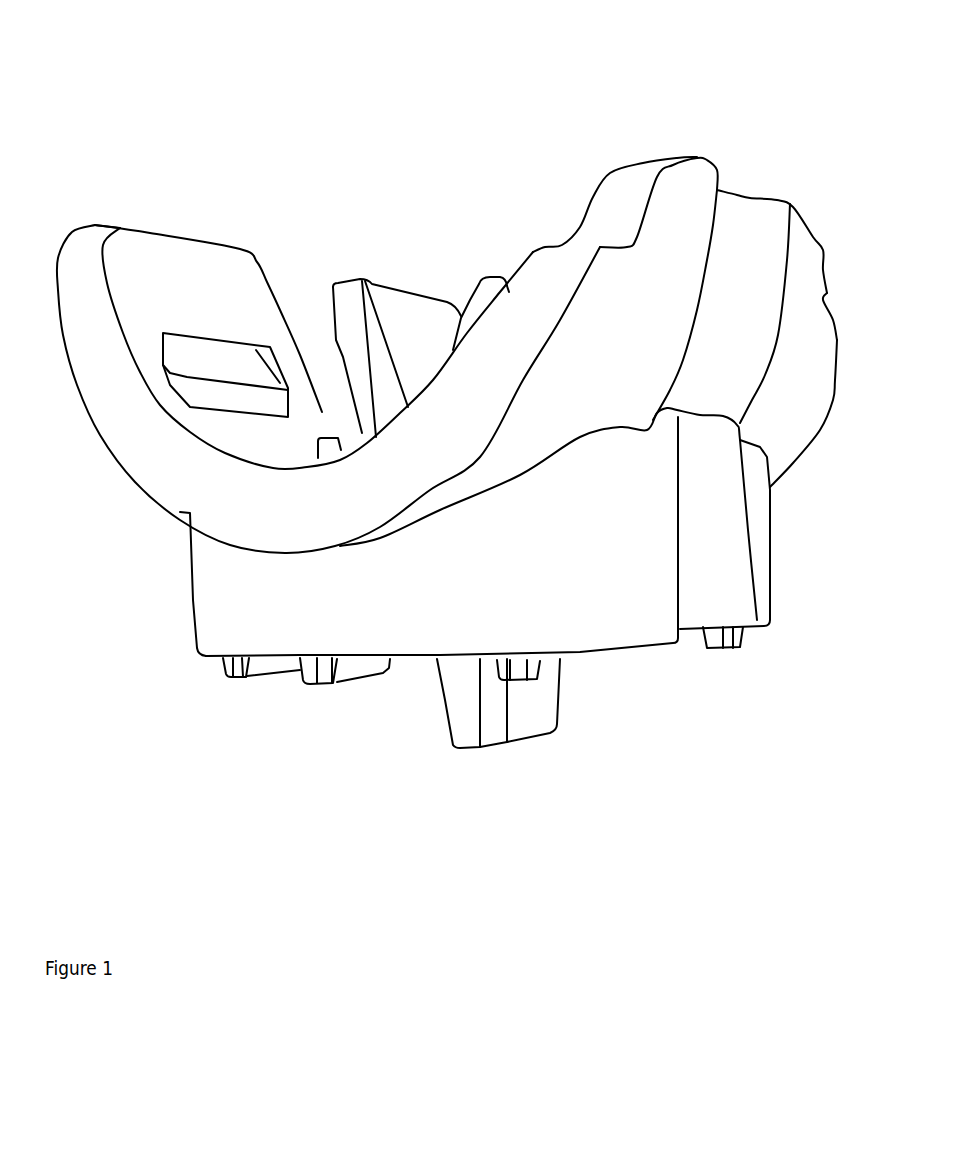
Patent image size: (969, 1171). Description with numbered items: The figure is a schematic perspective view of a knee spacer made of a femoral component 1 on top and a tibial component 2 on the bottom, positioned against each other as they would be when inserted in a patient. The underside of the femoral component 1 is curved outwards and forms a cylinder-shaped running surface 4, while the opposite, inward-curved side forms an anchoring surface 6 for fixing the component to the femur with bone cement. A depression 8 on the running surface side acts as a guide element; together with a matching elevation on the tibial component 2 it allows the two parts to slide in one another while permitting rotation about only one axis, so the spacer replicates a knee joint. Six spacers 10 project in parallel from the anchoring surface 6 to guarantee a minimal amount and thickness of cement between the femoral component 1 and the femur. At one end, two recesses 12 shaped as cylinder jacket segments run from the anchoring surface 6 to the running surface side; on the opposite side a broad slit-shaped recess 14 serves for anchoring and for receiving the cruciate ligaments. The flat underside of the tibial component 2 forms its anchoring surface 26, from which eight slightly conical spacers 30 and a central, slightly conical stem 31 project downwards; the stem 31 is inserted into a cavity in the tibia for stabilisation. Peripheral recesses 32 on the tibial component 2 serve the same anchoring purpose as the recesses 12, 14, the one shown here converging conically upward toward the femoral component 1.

The femoral component 1 is at (365, 104).
The tibial component 2 is at (381, 778).
The running surface 4 is at (651, 322).
The anchoring surface 6 is at (153, 284).
The depression 8 is at (729, 268).
The spacers 10 is at (204, 357).
The recesses 12 is at (595, 225).
The slit-shaped recess 14 is at (329, 378).
The anchoring surface 26 is at (625, 656).
The spacers 30 is at (256, 673).
The stem 31 is at (466, 703).
The recesses 32 is at (710, 532).